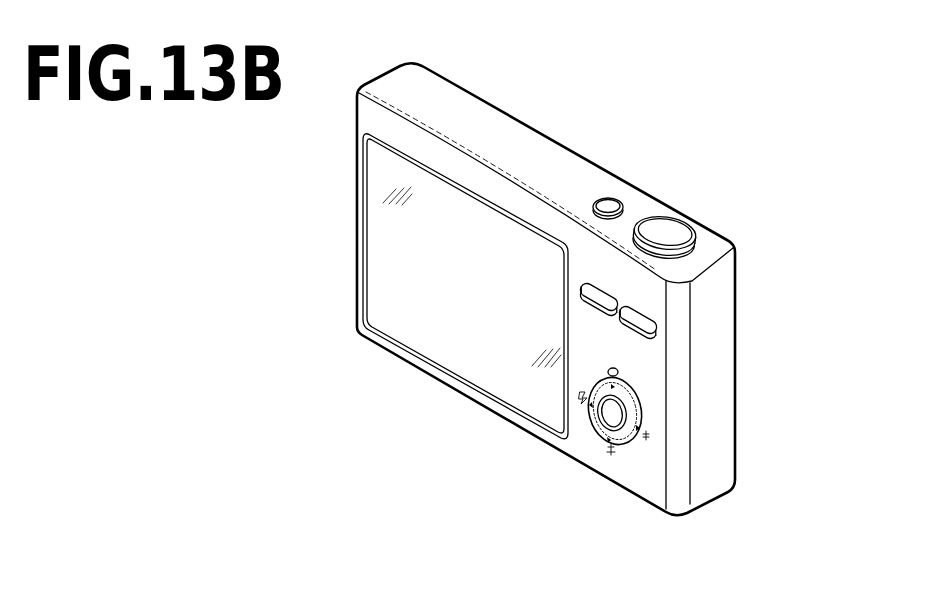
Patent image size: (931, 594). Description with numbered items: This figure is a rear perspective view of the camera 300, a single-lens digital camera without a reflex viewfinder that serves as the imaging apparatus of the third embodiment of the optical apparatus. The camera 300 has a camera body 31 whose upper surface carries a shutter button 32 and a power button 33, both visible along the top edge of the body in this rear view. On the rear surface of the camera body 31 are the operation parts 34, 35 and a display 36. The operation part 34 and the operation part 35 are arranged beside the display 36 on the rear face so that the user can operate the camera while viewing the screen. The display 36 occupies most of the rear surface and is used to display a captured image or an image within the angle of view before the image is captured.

The camera 300 is at (301, 198).
The camera body 31 is at (727, 398).
The shutter button 32 is at (673, 225).
The power button 33 is at (612, 198).
The operation part 34 is at (655, 336).
The operation part 35 is at (625, 443).
The display 36 is at (447, 350).